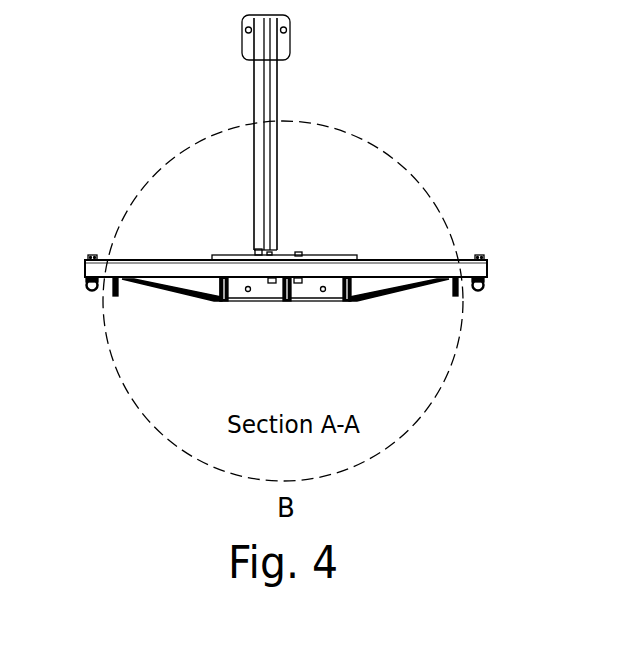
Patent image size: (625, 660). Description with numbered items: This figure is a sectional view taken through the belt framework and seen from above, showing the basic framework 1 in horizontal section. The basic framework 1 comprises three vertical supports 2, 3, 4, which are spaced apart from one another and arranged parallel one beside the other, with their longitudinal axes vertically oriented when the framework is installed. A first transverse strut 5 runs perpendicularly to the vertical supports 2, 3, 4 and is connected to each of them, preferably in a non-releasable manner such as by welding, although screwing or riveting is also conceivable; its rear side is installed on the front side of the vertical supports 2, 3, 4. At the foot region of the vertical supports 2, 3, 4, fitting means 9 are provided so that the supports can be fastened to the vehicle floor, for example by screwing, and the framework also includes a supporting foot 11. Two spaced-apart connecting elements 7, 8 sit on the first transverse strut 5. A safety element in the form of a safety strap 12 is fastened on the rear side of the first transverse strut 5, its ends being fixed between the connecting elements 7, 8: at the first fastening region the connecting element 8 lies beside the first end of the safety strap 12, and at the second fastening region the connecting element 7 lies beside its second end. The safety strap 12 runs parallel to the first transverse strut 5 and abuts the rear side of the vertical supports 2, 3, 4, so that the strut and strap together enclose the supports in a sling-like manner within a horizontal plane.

The basic framework 1 is at (152, 447).
The vertical support 2 is at (237, 298).
The vertical support 3 is at (303, 300).
The vertical support 4 is at (328, 286).
The first transverse strut 5 is at (478, 268).
The connecting element 7 is at (455, 297).
The connecting element 8 is at (95, 291).
The fitting means 9 is at (337, 293).
The supporting foot 11 is at (276, 92).
The safety strap 12 is at (386, 292).